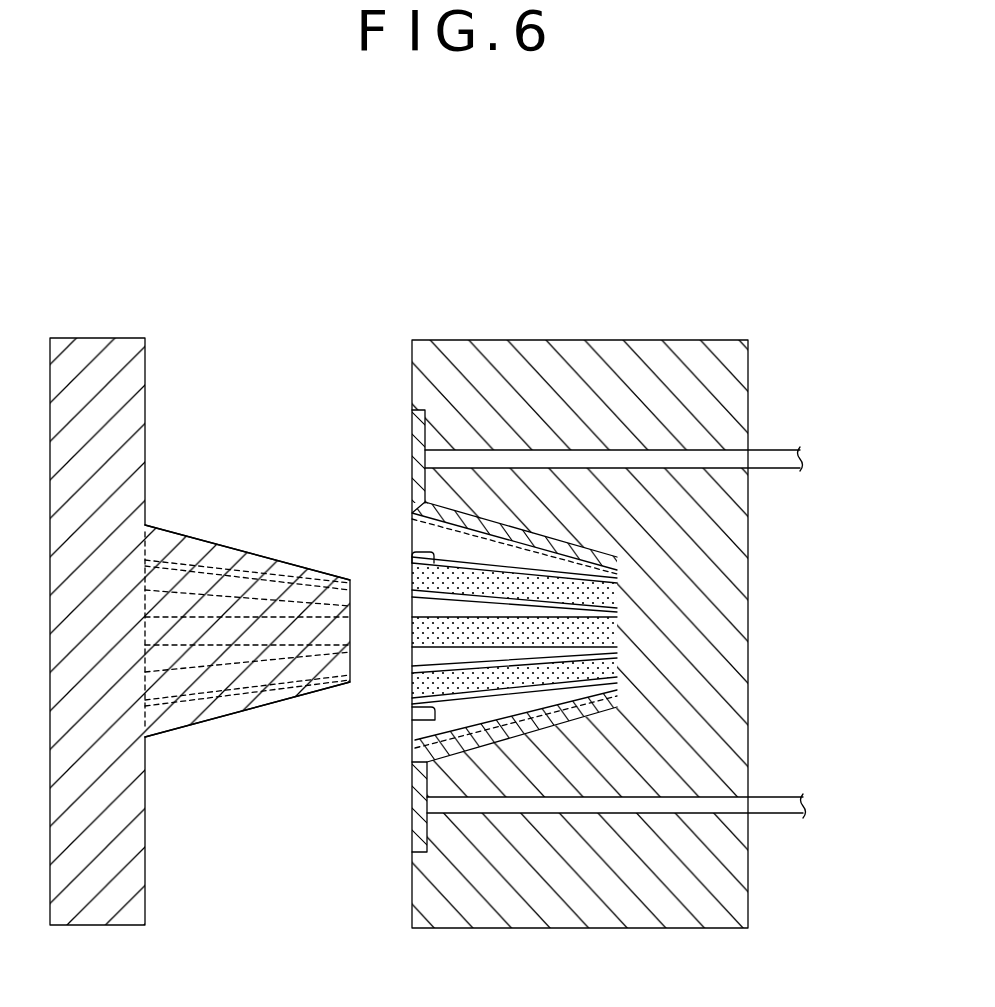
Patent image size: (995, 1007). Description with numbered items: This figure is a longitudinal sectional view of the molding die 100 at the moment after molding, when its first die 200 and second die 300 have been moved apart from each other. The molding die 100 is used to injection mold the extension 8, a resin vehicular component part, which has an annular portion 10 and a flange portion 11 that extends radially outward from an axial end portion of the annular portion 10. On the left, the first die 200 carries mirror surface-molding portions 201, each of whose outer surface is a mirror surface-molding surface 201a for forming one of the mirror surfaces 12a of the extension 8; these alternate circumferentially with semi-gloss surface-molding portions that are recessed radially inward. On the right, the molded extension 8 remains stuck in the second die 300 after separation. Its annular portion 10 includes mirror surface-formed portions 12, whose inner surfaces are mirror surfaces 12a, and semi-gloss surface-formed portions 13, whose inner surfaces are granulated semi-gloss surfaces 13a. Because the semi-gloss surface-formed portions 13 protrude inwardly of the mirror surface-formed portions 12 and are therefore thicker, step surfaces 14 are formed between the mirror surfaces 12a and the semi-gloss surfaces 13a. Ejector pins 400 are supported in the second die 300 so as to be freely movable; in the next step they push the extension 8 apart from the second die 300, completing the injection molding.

The molding die 100 is at (208, 182).
The first die 200 is at (98, 346).
The mirror surface-molding portion 201 is at (205, 545).
The mirror surface-molding surface 201a is at (275, 556).
The second die 300 is at (457, 360).
The ejector pin 400 is at (763, 455).
The annular portion 10 is at (589, 533).
The flange portion 11 is at (412, 447).
The mirror surface-formed portion 12 is at (435, 538).
The mirror surface 12a is at (435, 548).
The semi-gloss surface-formed portion 13 is at (620, 577).
The semi-gloss surface 13a is at (435, 530).
The step surface 14 is at (412, 558).
The extension 8 is at (412, 845).